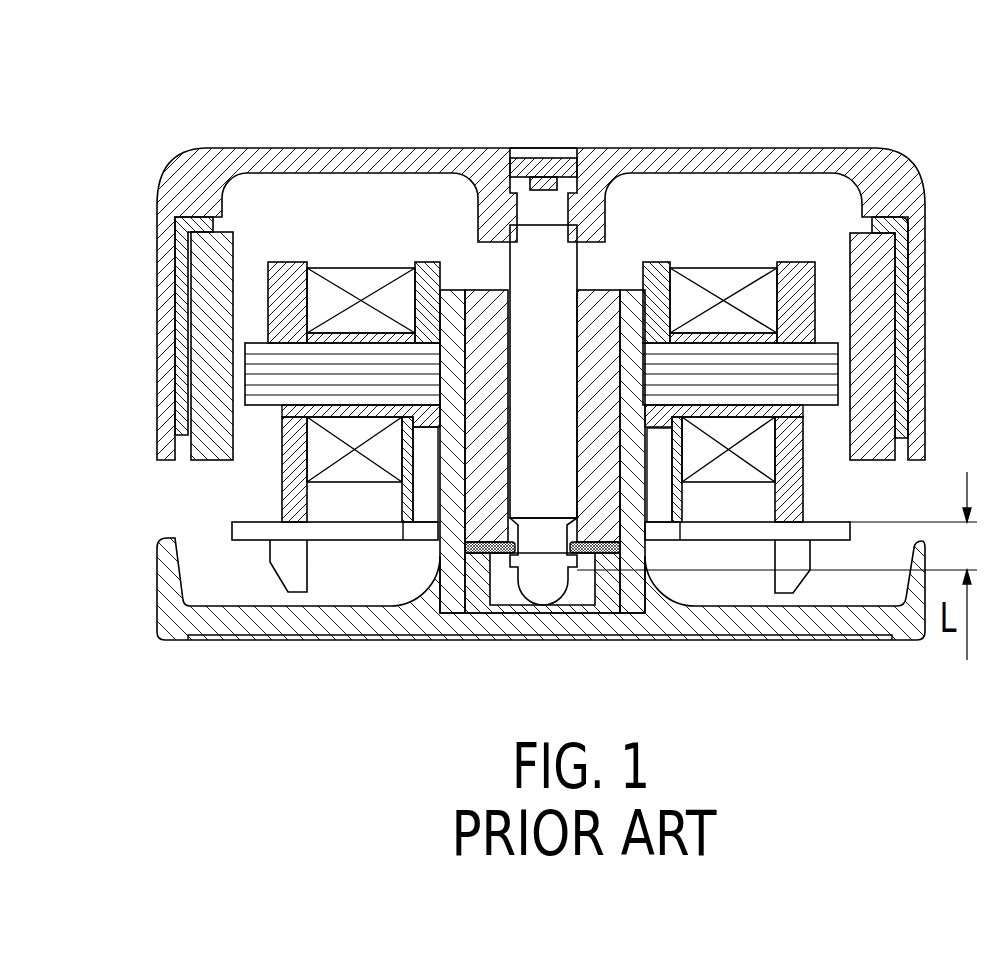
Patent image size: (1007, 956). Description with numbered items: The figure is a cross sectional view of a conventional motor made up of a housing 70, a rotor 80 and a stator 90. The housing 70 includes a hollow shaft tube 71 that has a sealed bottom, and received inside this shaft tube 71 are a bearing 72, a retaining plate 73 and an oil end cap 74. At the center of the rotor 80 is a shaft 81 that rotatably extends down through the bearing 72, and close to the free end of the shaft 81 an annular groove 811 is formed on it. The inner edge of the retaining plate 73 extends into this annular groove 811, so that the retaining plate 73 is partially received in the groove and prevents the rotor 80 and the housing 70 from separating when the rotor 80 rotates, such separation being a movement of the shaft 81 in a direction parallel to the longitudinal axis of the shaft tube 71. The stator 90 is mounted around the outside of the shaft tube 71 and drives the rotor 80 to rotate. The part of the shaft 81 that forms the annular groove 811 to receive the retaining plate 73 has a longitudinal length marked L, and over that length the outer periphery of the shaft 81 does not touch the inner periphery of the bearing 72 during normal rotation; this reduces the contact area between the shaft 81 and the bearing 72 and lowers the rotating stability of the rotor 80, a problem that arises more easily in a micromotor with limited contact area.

The housing 70 is at (768, 620).
The shaft tube 71 is at (452, 300).
The bearing 72 is at (487, 305).
The retaining plate 73 is at (473, 552).
The oil end cap 74 is at (603, 603).
The rotor 80 is at (725, 163).
The shaft 81 is at (530, 273).
The annular groove 811 is at (532, 547).
The stator 90 is at (757, 257).